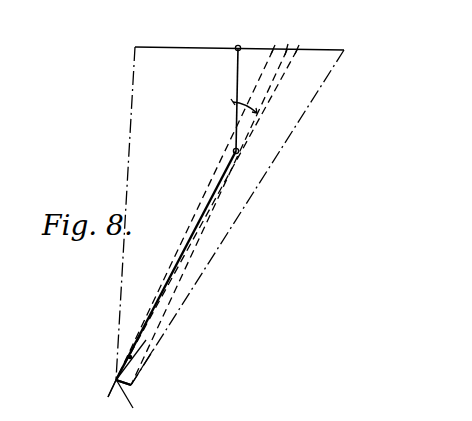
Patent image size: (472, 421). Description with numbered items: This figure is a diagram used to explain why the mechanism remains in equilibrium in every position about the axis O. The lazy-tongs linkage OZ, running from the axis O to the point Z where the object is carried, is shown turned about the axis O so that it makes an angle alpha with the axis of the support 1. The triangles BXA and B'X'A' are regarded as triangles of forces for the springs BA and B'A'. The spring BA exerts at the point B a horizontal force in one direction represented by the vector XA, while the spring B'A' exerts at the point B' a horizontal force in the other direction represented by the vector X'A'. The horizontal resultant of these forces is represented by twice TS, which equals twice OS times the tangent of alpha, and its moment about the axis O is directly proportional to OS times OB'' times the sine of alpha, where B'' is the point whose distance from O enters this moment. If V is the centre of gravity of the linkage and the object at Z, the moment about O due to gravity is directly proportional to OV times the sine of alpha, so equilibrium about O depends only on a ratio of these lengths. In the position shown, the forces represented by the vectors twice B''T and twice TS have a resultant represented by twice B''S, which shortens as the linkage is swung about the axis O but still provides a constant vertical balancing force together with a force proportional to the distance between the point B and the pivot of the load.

The support 1 is at (237, 78).
The point A is at (234, 39).
The point A' is at (245, 208).
The point S is at (236, 46).
The point X is at (195, 202).
The point T is at (211, 201).
The point X' is at (215, 202).
The axis O is at (233, 151).
The point B is at (165, 274).
The point B' is at (133, 390).
The point B'' is at (135, 401).
The point Z is at (108, 398).
The centre of gravity V is at (131, 357).